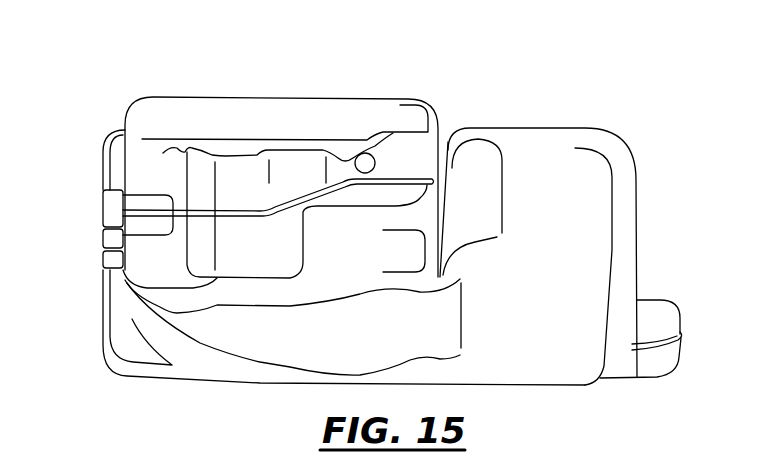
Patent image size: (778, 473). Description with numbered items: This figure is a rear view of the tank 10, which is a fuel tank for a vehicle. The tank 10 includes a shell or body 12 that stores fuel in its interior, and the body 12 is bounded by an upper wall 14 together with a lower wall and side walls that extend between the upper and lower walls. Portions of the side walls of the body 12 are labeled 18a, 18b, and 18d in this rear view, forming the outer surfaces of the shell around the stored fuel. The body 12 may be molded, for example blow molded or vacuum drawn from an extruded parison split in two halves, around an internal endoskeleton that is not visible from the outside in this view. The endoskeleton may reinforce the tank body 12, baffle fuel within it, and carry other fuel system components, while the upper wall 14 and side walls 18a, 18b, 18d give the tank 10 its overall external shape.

The tank 10 is at (96, 66).
The shell or body 12 is at (228, 70).
The upper wall 14 is at (333, 97).
The hinge 18a is at (125, 181).
The latch 18b is at (637, 222).
The recess 18d is at (360, 266).